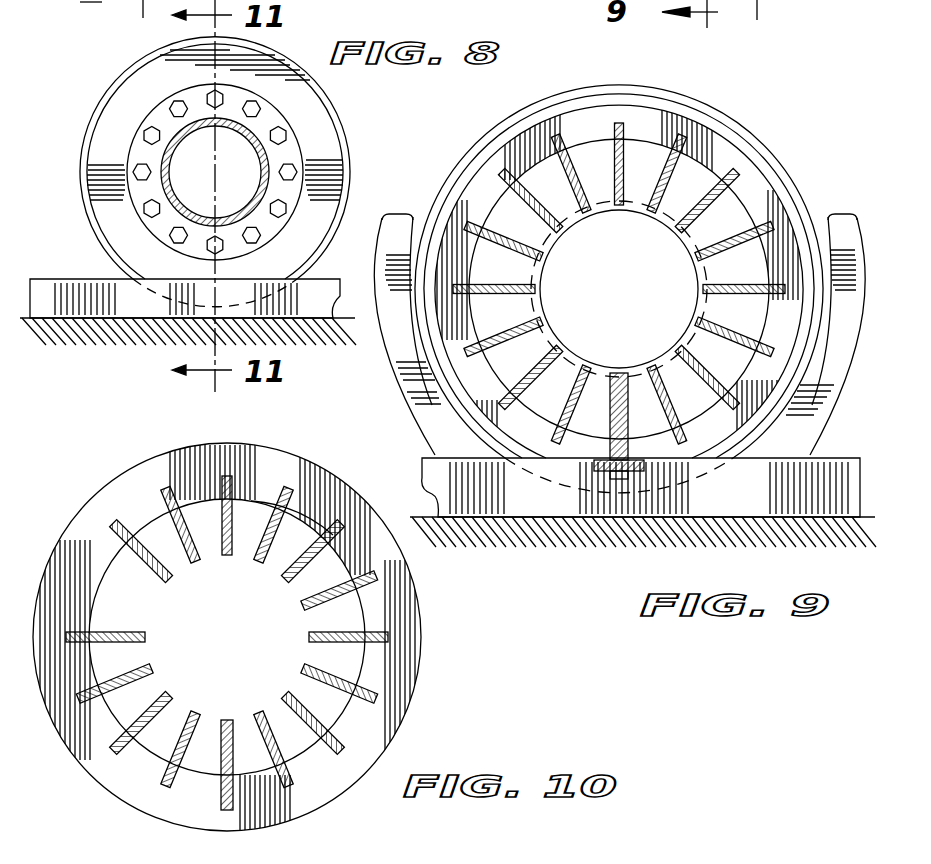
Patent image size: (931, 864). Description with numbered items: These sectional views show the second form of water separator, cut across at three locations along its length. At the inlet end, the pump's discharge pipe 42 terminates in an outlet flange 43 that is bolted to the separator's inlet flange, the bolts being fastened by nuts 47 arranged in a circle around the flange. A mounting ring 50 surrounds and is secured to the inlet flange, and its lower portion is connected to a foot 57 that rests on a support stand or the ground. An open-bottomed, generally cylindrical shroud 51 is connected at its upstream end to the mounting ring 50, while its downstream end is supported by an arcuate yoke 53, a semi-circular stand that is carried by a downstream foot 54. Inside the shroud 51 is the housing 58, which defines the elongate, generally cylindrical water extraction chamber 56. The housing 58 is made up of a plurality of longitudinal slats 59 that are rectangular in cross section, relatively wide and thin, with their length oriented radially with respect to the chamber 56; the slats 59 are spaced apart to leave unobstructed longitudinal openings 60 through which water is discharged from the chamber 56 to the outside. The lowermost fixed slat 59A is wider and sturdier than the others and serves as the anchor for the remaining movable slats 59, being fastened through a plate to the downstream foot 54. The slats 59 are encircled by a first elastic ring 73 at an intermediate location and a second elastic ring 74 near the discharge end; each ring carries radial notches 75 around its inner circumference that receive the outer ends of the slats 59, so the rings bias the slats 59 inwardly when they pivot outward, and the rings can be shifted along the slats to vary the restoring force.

In FIG. 8, the discharge pipe 42 is at (270, 158).
In FIG. 8, the outlet flange 43 is at (160, 118).
In FIG. 8, the nuts 47 is at (138, 172).
In FIG. 8, the mounting ring 50 is at (312, 124).
In FIG. 8, the shroud 51 is at (132, 68).
In FIG. 9, the shroud 51 is at (730, 112).
In FIG. 9, the arcuate yoke 53 is at (404, 385).
In FIG. 9, the downstream foot 54 is at (487, 462).
In FIG. 9, the water extraction chamber 56 is at (648, 264).
In FIG. 10, the water extraction chamber 56 is at (255, 613).
In FIG. 8, the foot 57 is at (70, 298).
In FIG. 9, the housing 58 is at (740, 151).
In FIG. 10, the housing 58 is at (242, 453).
In FIG. 9, the slats 59 is at (507, 243).
In FIG. 10, the slats 59 is at (152, 545).
In FIG. 10, the fixed slat 59A is at (215, 792).
In FIG. 9, the openings 60 is at (646, 152).
In FIG. 10, the openings 60 is at (300, 750).
In FIG. 9, the first elastic ring 73 is at (805, 228).
In FIG. 10, the second elastic ring 74 is at (397, 615).
In FIG. 10, the radial notches 75 is at (320, 497).